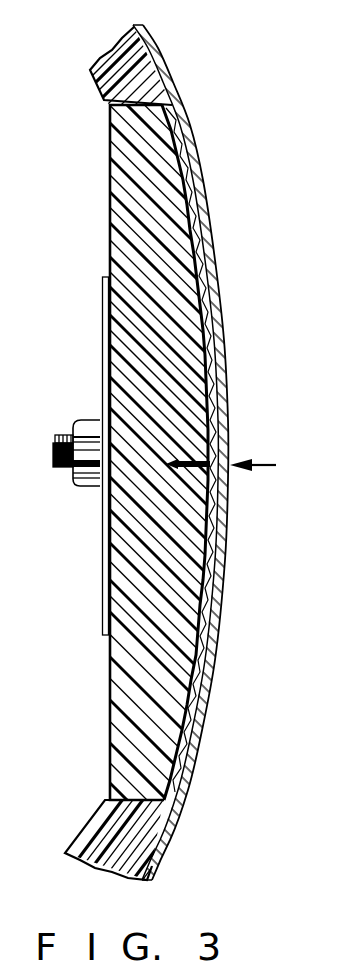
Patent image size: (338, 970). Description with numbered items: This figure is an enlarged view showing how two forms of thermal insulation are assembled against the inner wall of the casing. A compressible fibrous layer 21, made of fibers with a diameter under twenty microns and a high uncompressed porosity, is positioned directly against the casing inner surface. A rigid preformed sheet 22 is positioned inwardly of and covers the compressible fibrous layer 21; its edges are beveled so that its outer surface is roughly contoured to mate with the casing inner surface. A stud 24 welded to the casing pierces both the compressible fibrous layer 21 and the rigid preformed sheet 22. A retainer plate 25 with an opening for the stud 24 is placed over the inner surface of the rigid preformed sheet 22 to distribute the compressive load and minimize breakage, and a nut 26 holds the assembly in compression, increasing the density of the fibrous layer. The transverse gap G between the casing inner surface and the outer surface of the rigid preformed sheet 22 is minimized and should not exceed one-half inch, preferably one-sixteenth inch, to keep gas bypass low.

The compressible fibrous layer 21 is at (222, 532).
The rigid preformed sheet 22 is at (222, 562).
The stud 24 is at (54, 444).
The retainer plate 25 is at (100, 514).
The nut 26 is at (88, 423).
The transverse gap G is at (232, 465).